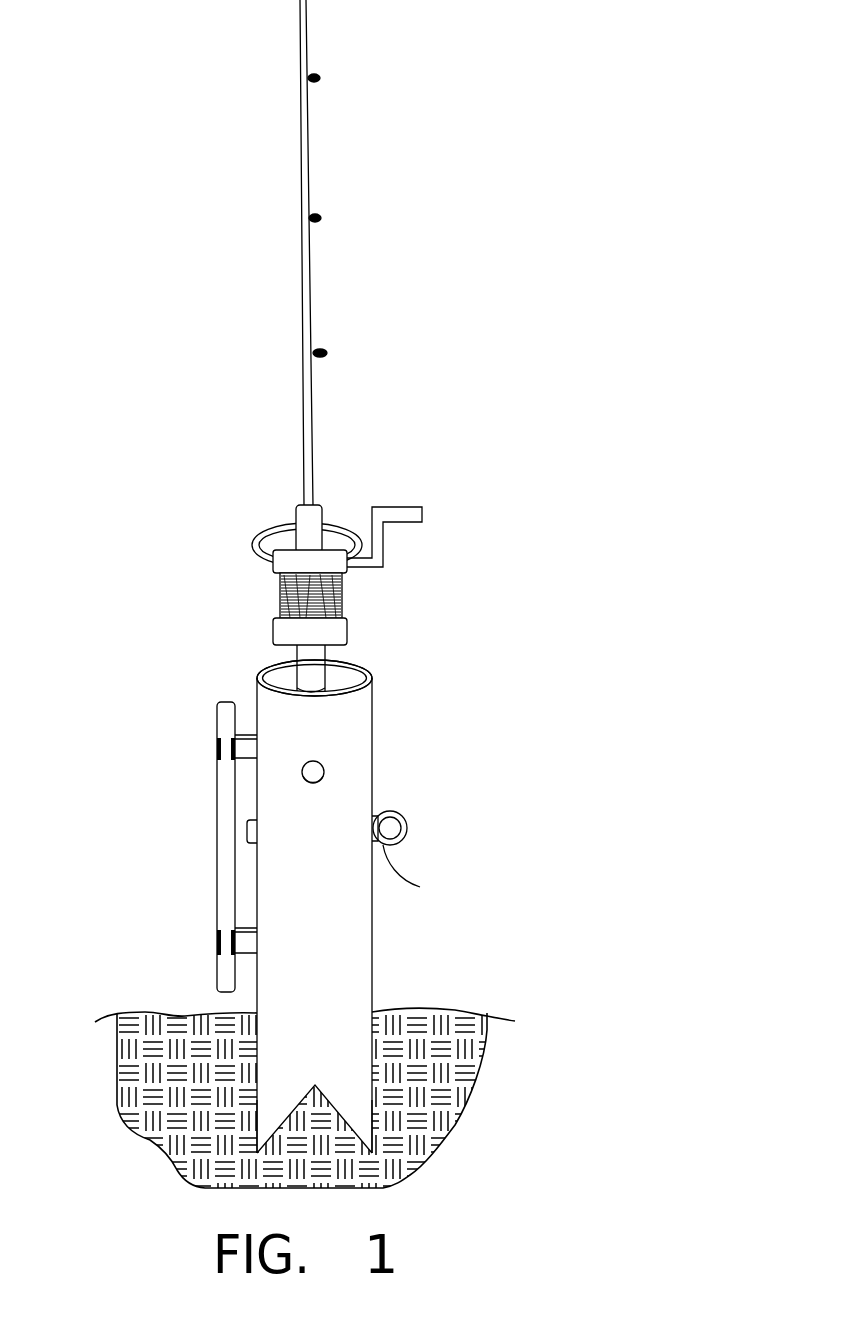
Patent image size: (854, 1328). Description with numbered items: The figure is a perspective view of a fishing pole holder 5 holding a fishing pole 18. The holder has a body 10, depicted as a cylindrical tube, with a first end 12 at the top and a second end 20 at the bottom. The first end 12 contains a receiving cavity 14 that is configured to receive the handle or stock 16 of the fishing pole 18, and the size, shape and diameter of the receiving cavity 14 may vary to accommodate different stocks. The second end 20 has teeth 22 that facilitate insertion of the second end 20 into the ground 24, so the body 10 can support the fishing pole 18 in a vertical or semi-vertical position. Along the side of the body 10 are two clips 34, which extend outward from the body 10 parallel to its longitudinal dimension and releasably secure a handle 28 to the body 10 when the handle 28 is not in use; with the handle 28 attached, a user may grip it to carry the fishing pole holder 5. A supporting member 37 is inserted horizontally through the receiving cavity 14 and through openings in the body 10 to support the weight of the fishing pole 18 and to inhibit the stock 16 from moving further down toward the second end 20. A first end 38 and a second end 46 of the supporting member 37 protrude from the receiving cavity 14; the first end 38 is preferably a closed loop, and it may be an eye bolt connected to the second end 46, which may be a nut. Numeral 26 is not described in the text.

The fishing pole holder 5 is at (133, 822).
The body 10 is at (362, 965).
The first end 12 is at (368, 672).
The receiving cavity 14 is at (282, 676).
The stock 16 is at (313, 678).
The fishing pole 18 is at (305, 280).
The second end 20 is at (357, 1045).
The teeth 22 is at (312, 1118).
The ground 24 is at (182, 1052).
The aperture 26 is at (322, 768).
The handle 28 is at (217, 843).
The clips 34 is at (248, 742).
The supporting member 37 is at (258, 847).
The first end of supporting member 38 is at (404, 816).
The second end of supporting member 46 is at (250, 822).